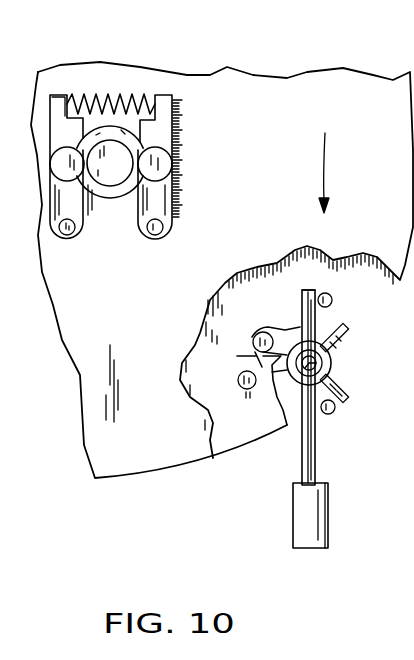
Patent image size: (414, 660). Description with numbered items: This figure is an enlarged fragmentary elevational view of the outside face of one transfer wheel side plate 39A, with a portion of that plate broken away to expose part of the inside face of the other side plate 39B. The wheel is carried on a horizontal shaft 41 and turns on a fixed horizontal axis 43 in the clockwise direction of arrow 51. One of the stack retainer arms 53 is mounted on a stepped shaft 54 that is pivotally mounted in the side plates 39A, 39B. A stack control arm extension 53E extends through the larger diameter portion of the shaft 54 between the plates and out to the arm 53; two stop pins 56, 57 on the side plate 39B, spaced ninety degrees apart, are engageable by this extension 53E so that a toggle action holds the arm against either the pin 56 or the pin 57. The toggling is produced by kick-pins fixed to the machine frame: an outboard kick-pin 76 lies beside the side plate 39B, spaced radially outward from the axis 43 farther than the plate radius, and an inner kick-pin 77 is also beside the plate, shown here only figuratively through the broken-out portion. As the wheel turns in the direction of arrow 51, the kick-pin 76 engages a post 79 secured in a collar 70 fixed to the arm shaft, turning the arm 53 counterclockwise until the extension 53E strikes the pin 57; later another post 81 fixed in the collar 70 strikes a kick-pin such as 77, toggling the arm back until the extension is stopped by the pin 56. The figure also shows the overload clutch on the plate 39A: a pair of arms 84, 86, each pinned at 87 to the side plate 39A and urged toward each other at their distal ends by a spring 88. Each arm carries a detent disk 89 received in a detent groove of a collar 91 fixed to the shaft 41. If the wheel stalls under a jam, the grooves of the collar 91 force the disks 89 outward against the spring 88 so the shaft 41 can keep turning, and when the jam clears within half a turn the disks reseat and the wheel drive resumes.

The side plate 39A is at (120, 457).
The side plate 39B is at (240, 432).
The horizontal shaft 41 is at (108, 182).
The horizontal axis 43 is at (112, 163).
The arrow 51 is at (329, 163).
The retainer arm 53 is at (313, 470).
The arm extension 53E is at (300, 315).
The stepped shaft 54 is at (316, 362).
The stop pin 56 is at (326, 293).
The stop pin 57 is at (243, 392).
The collar 70 is at (330, 350).
The outboard kick-pin 76 is at (343, 388).
The inner kick-pin 77 is at (253, 350).
The post 79 is at (336, 409).
The post 81 is at (347, 320).
The clutch arm 84 is at (158, 193).
The clutch arm 86 is at (58, 107).
The pin 87 is at (69, 234).
The spring 88 is at (102, 97).
The detent disk 89 is at (63, 163).
The collar 91 is at (136, 148).